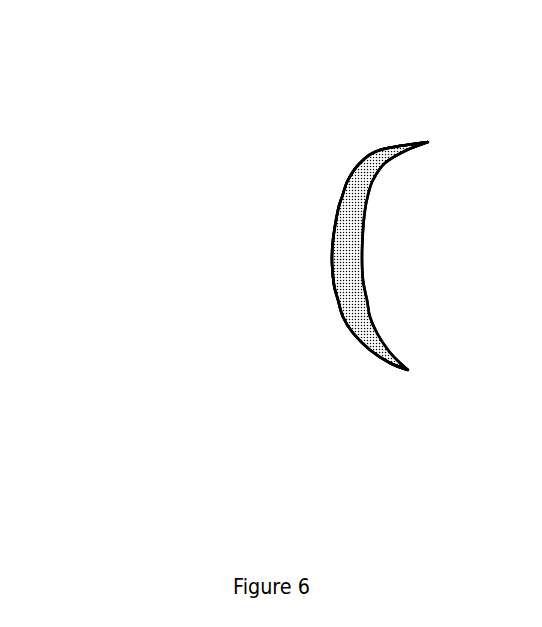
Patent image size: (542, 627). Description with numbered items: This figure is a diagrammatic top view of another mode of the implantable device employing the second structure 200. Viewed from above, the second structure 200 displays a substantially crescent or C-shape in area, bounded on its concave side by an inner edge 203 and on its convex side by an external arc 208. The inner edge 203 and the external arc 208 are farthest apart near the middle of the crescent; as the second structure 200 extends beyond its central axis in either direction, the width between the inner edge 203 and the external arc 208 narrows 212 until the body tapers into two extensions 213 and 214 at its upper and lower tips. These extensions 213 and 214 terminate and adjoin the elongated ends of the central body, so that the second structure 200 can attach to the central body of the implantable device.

The second structure 200 is at (185, 92).
The inner edge 203 is at (372, 257).
The external arc 208 is at (317, 267).
The narrowing 212 is at (368, 195).
The extension 213 is at (385, 132).
The extension 214 is at (377, 383).